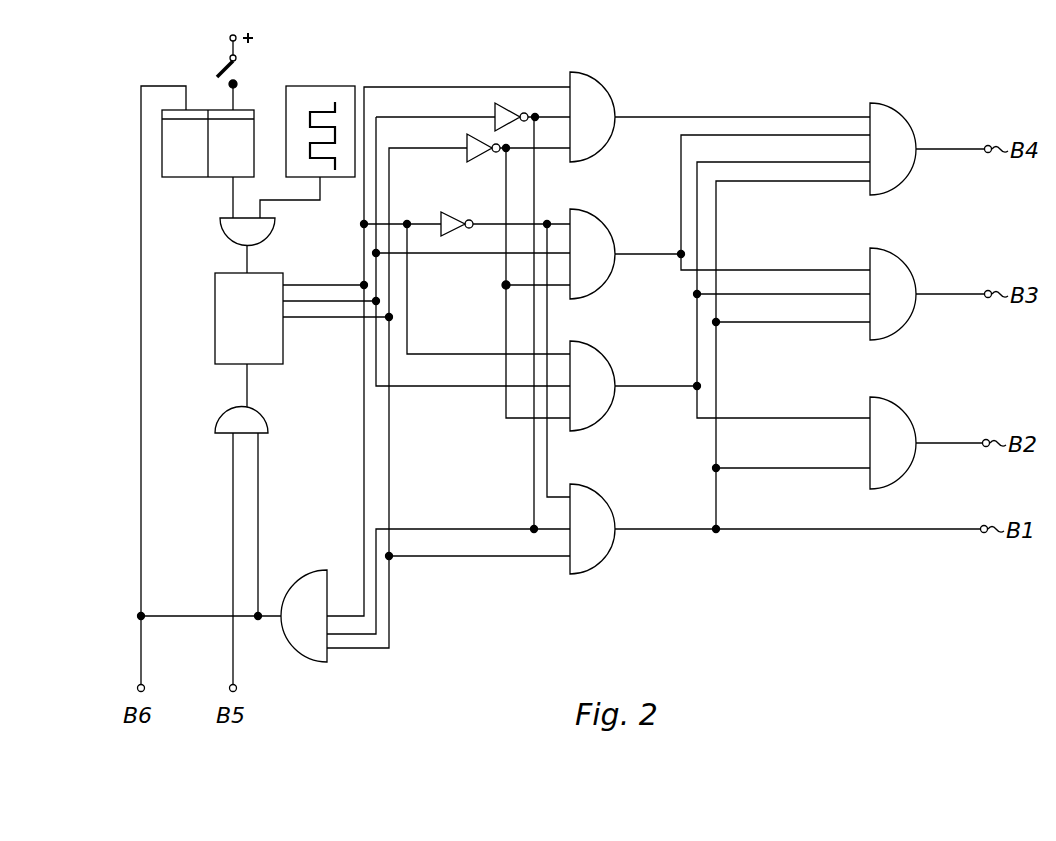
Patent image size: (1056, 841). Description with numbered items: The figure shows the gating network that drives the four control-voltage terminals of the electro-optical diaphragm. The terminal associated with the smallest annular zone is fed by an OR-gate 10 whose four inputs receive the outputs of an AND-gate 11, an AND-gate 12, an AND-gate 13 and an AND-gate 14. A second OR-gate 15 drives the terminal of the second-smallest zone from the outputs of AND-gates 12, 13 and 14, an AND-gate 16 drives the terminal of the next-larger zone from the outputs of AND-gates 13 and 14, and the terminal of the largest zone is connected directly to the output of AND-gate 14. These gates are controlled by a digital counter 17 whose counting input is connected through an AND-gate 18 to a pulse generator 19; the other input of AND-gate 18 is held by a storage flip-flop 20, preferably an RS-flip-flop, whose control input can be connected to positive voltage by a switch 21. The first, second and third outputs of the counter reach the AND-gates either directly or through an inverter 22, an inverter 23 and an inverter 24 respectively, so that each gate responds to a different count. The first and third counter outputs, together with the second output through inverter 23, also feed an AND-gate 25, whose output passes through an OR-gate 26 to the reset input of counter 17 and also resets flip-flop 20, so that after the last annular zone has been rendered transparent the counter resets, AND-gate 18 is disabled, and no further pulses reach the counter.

The OR-gate 10 is at (905, 125).
The AND-gate 11 is at (595, 90).
The AND-gate 12 is at (595, 228).
The AND-gate 13 is at (596, 365).
The AND-gate 14 is at (596, 506).
The second OR-gate 15 is at (900, 280).
The AND-gate 16 is at (900, 425).
The digital counter 17 is at (225, 295).
The AND-gate 18 is at (262, 232).
The pulse generator 19 is at (310, 96).
The storage flip-flop 20 is at (194, 133).
The switch 21 is at (236, 82).
The inverter 22 is at (463, 216).
The inverter 23 is at (500, 106).
The inverter 24 is at (474, 140).
The AND-gate 25 is at (300, 582).
The OR-gate 26 is at (225, 420).